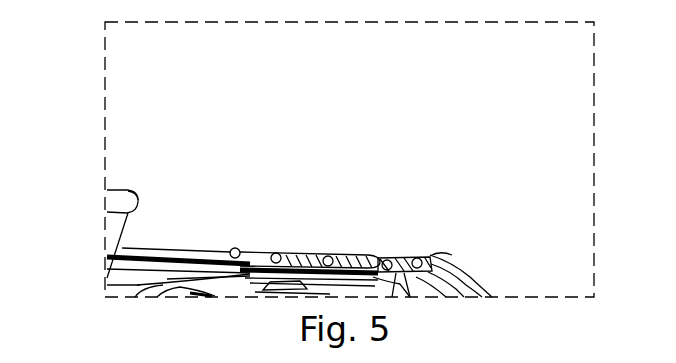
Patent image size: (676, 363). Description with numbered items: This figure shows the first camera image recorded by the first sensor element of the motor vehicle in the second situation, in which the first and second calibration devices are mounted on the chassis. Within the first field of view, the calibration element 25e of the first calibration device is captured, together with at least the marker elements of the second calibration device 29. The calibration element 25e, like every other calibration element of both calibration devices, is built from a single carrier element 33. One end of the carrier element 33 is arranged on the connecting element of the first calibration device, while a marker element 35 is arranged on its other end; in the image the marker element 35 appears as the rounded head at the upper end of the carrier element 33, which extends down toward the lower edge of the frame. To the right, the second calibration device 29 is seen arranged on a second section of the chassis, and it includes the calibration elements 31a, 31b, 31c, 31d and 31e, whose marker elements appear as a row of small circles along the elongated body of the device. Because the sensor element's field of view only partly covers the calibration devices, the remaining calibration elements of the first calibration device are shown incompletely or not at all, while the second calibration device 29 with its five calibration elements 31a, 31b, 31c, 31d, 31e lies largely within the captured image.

The marker element 35 is at (127, 201).
The calibration element 25e is at (144, 178).
The carrier element 33 is at (117, 225).
The calibration element 31e is at (233, 248).
The calibration element 31d is at (278, 253).
The calibration element 31c is at (330, 256).
The calibration element 31b is at (388, 259).
The second calibration device 29 is at (421, 237).
The calibration element 31a is at (430, 258).